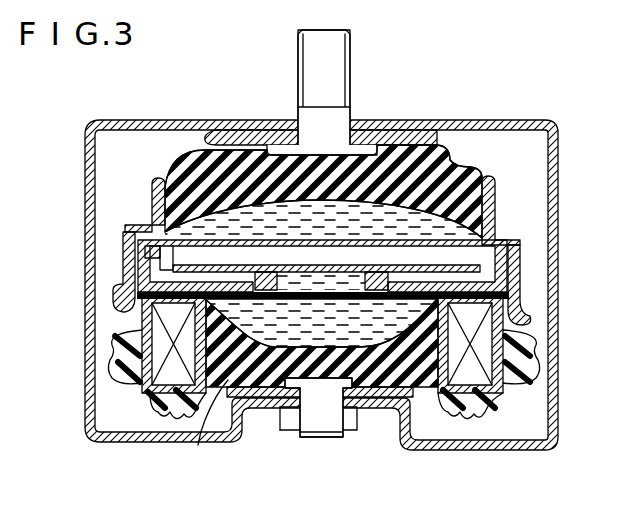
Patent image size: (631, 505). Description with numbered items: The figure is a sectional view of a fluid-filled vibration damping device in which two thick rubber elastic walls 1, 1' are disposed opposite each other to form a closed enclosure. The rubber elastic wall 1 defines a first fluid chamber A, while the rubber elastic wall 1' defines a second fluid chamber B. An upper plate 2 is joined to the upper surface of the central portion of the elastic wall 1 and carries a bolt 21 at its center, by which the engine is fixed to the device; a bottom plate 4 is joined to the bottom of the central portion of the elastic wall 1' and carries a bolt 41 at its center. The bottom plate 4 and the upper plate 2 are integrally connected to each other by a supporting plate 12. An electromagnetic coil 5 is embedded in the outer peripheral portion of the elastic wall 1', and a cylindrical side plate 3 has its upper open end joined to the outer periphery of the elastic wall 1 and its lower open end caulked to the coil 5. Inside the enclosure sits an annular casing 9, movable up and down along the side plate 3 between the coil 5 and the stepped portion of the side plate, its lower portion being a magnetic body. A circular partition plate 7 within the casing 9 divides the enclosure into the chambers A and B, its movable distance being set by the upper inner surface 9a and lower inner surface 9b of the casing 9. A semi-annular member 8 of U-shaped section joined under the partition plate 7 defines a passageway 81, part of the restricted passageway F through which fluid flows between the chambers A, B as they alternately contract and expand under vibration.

The rubber elastic wall 1 is at (316, 187).
The rubber elastic wall 1' is at (199, 470).
The upper plate 2 is at (400, 140).
The cylindrical side plate 3 is at (150, 222).
The bottom plate 4 is at (380, 400).
The electromagnetic coil 5 is at (168, 373).
The partition plate 7 is at (258, 300).
The semi-annular member 8 is at (308, 437).
The annular casing 9 is at (143, 252).
The upper inner surface 9a is at (195, 265).
The lower inner surface 9b is at (133, 295).
The supporting plate 12 is at (553, 148).
The bolt 21 is at (338, 65).
The bolt 41 is at (327, 427).
The passageway 81 is at (432, 405).
The first fluid chamber A is at (155, 200).
The second fluid chamber B is at (258, 440).
The restricted passageway F is at (323, 273).